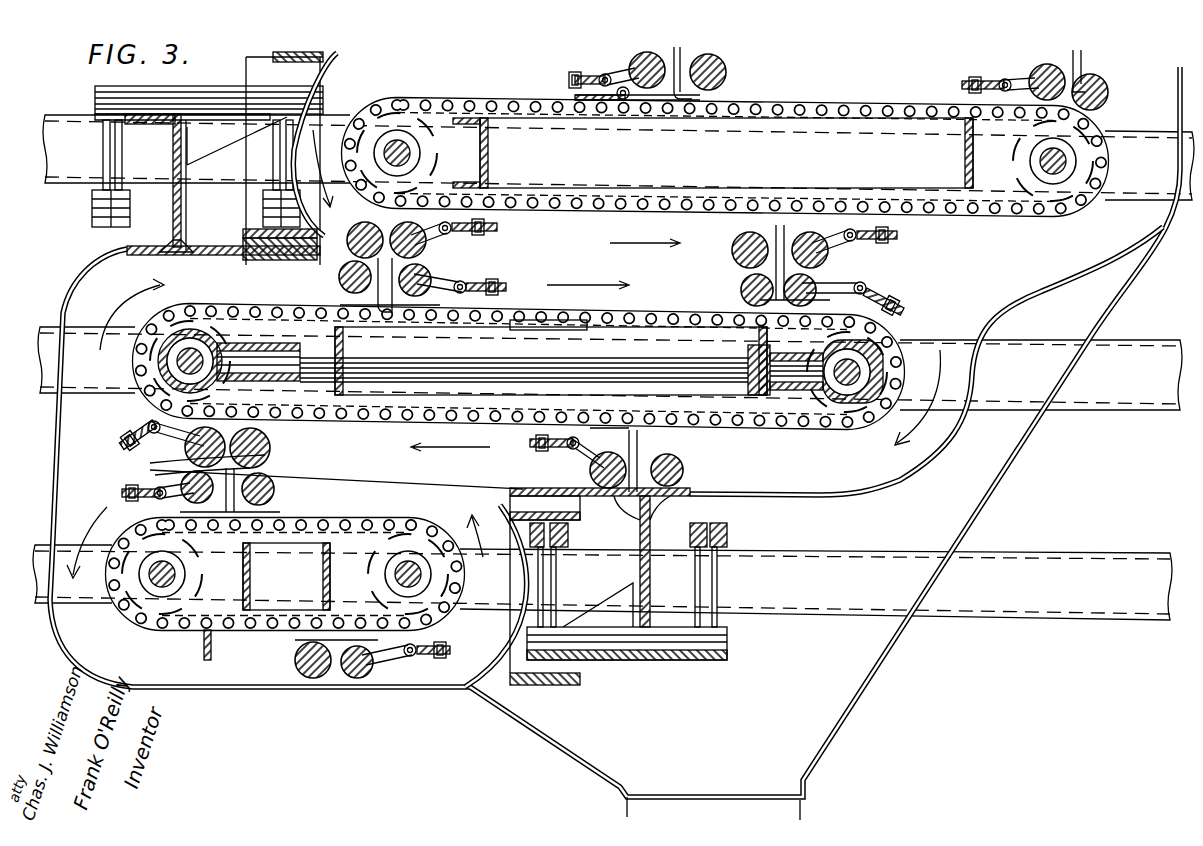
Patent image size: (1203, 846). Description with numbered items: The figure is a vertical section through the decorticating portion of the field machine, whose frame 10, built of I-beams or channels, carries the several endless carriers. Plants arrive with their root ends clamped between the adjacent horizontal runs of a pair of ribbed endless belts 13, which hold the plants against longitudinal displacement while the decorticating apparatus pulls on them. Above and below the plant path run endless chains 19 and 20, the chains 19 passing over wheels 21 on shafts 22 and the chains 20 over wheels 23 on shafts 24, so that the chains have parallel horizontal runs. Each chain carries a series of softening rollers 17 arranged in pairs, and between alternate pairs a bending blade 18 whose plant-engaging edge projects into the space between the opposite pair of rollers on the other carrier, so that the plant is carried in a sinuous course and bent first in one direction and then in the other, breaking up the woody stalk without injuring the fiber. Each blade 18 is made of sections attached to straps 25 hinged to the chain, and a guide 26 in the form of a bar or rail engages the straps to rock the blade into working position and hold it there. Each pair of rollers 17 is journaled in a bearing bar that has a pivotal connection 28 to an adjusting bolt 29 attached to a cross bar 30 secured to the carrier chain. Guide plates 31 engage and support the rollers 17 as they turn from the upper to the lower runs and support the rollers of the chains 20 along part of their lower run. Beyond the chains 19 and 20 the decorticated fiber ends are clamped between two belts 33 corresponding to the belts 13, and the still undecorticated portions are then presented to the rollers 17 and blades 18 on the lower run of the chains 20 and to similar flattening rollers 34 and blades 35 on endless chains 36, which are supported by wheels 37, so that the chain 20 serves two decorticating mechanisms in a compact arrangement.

The frame 10 is at (1140, 200).
The endless belts 13 is at (275, 60).
The softening rollers 17 is at (632, 62).
The blades 18 is at (684, 46).
The endless chains 19 is at (402, 104).
The endless chains 20 is at (500, 312).
The wheels 21 is at (435, 160).
The shafts 22 is at (412, 148).
The wheels 23 is at (165, 332).
The shafts 24 is at (175, 358).
The straps 25 is at (418, 322).
The guide 26 is at (650, 318).
The pivotal connection 28 is at (455, 284).
The adjusting bolt 29 is at (500, 228).
The cross bar 30 is at (480, 300).
The guide plates 31 is at (330, 80).
The belts 33 is at (508, 492).
The flattening rollers 34 is at (160, 480).
The blades 35 is at (265, 485).
The endless chains 36 is at (245, 257).
The wheels 37 is at (320, 578).